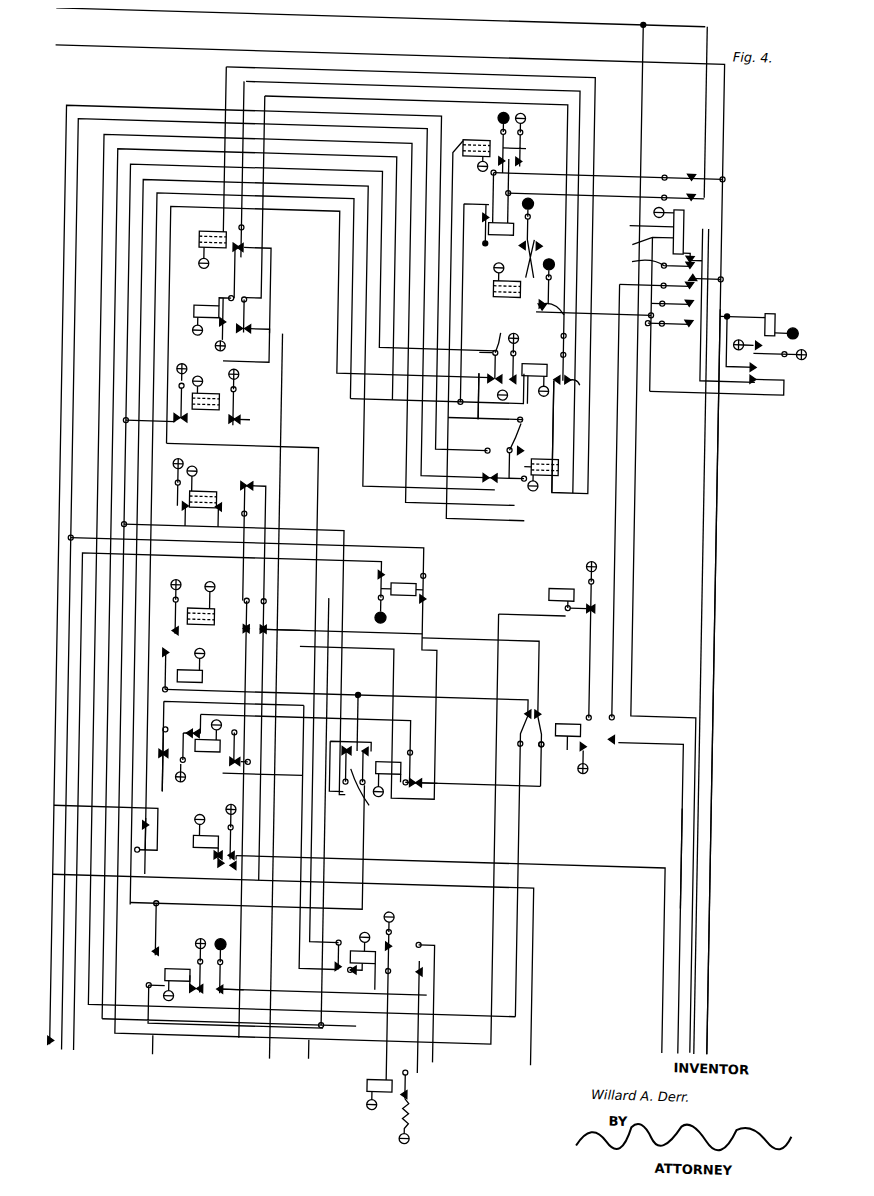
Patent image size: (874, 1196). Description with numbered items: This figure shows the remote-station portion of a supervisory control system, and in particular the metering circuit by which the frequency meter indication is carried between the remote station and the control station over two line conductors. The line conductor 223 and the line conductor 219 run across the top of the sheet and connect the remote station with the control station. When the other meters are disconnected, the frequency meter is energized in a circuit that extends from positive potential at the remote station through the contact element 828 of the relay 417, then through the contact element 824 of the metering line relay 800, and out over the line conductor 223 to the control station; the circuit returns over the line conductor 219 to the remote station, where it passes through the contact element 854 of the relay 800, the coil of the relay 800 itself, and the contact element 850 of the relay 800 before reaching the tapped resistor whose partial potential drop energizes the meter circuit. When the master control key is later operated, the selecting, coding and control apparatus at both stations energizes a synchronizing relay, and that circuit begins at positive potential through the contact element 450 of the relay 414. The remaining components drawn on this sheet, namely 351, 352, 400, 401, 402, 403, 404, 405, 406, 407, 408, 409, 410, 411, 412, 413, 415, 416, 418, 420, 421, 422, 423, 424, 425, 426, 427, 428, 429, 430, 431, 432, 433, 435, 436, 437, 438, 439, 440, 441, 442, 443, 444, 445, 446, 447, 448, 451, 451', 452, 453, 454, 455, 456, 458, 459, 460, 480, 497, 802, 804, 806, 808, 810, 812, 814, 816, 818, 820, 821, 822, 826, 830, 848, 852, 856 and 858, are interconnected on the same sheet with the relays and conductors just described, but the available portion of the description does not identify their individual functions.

The line conductor 219 is at (380, 103).
The line conductor 223 is at (381, 542).
The relay 351 is at (378, 1080).
The contact and resistor 352 is at (416, 1082).
The relay 400 is at (495, 232).
The relay 401 is at (480, 134).
The relay 402 is at (502, 287).
The relay 403 is at (546, 360).
The relay 404 is at (534, 455).
The relay 405 is at (213, 237).
The relay 406 is at (205, 311).
The relay 407 is at (197, 416).
The relay 408 is at (197, 499).
The relay 409 is at (227, 621).
The relay 410 is at (206, 686).
The relay 411 is at (226, 760).
The relay 412 is at (213, 840).
The relay 413 is at (175, 978).
The relay 414 is at (408, 596).
The relay 415 is at (392, 757).
The relay 416 is at (367, 964).
The relay 417 is at (561, 719).
The relay 418 is at (548, 590).
The contact 420 is at (527, 230).
The contact 421 is at (547, 317).
The contact 422 is at (240, 248).
The contact 423 is at (568, 435).
The contact 424 is at (542, 256).
The conductor 425 is at (415, 231).
The contact 426 is at (250, 324).
The contact 427 is at (233, 420).
The contact 428 is at (190, 380).
The conductor 429 is at (124, 690).
The contact 430 is at (493, 366).
The conductor 431 is at (332, 380).
The contact 432 is at (175, 620).
The contact 433 is at (243, 605).
The contact 435 is at (588, 612).
The contact 436 is at (254, 533).
The contact 437 is at (232, 884).
The conductor 438 is at (150, 458).
The contact 439 is at (172, 650).
The contact 440 is at (109, 841).
The contact 441 is at (165, 770).
The contact 442 is at (346, 942).
The contact 443 is at (499, 447).
The contact 444 is at (511, 358).
The conductor 445 is at (430, 770).
The contact 446 is at (538, 740).
The contact 447 is at (189, 739).
The contact 448 is at (194, 776).
The contact element 450 is at (367, 597).
The conductor 451 is at (297, 591).
The conductor 451' is at (289, 618).
The conductor 452 is at (134, 118).
The contact 453 is at (188, 884).
The conductor 454 is at (58, 1066).
The contact 455 is at (375, 797).
The contact 456 is at (420, 950).
The contact 458 is at (596, 748).
The contact 459 is at (524, 712).
The contact 460 is at (210, 950).
The contact 480 is at (232, 996).
The conductor 497 is at (233, 744).
The metering line relay 800 is at (666, 231).
The relay 802 is at (766, 312).
The conductor 804 is at (673, 193).
The terminal 806 is at (637, 210).
The conductor 808 is at (507, 184).
The conductor 810 is at (482, 184).
The conductor 812 is at (648, 170).
The contact 814 is at (668, 168).
The contact 816 is at (513, 133).
The contact 818 is at (530, 140).
The conductor 820 is at (716, 497).
The contact 821 is at (770, 359).
The conductor 822 is at (643, 482).
The contact element 824 is at (705, 276).
The conductor 826 is at (646, 282).
The contact element 828 is at (616, 727).
The conductor 830 is at (685, 794).
The conductor 848 is at (700, 646).
The contact element 850 is at (674, 322).
The conductor 852 is at (636, 228).
The contact element 854 is at (646, 265).
The contact 856 is at (697, 250).
The conductor 858 is at (635, 314).